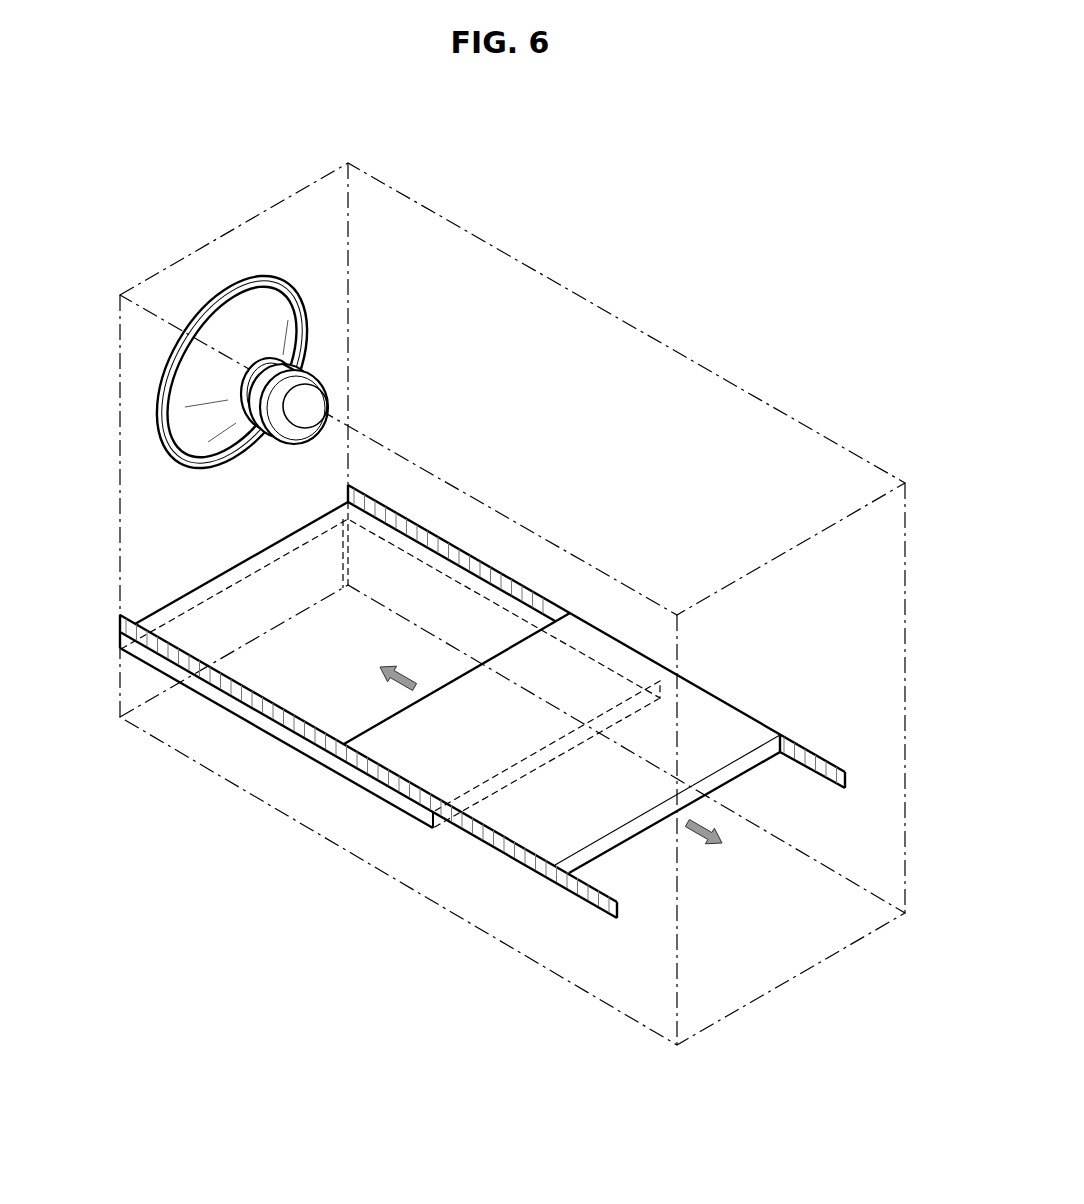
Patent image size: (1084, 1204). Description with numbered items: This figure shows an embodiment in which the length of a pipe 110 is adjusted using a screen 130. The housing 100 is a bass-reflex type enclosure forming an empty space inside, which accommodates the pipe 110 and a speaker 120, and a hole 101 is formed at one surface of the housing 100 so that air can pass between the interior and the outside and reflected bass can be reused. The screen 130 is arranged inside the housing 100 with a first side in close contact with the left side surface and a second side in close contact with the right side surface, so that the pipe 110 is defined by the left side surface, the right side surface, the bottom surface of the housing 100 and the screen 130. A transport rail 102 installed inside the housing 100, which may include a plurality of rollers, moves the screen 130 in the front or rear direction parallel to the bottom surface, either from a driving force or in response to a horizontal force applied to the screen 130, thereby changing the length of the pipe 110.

The housing 100 is at (414, 187).
The hole 101 is at (245, 647).
The transport rail 102 is at (584, 890).
The pipe 110 is at (500, 760).
The speaker 120 is at (238, 312).
The screen 130 is at (707, 733).